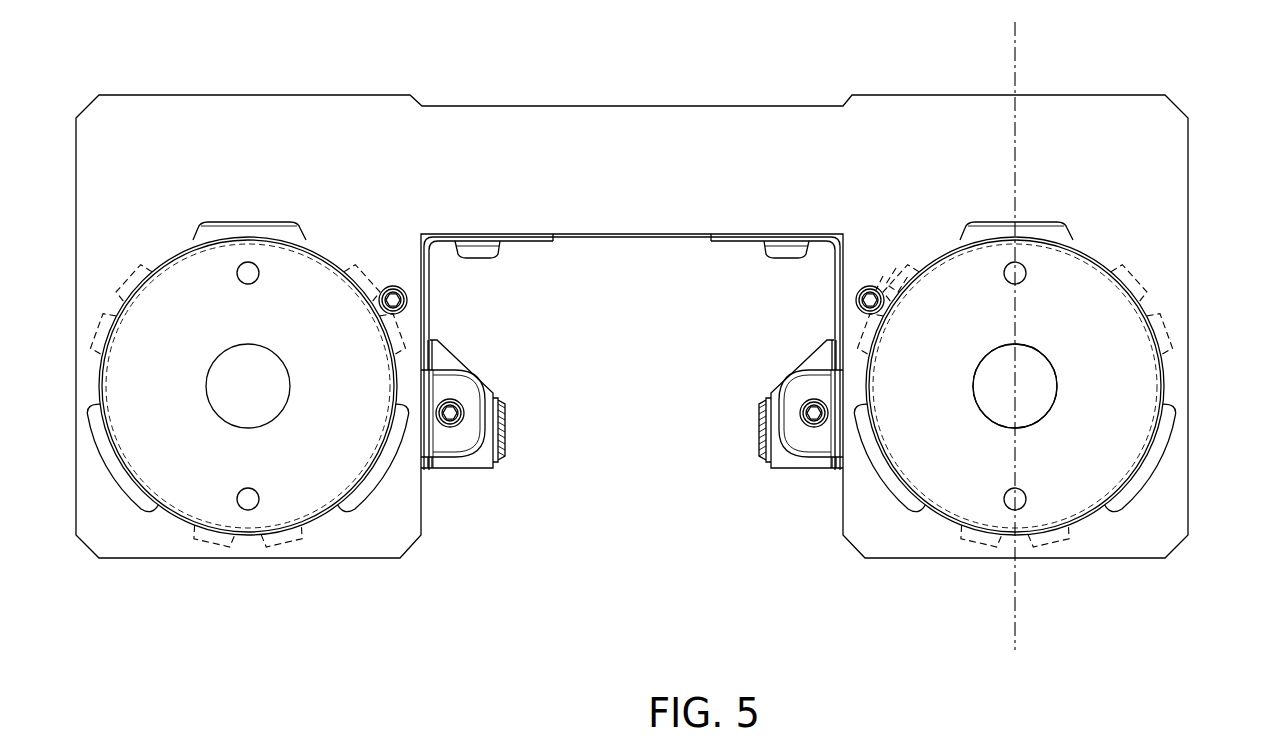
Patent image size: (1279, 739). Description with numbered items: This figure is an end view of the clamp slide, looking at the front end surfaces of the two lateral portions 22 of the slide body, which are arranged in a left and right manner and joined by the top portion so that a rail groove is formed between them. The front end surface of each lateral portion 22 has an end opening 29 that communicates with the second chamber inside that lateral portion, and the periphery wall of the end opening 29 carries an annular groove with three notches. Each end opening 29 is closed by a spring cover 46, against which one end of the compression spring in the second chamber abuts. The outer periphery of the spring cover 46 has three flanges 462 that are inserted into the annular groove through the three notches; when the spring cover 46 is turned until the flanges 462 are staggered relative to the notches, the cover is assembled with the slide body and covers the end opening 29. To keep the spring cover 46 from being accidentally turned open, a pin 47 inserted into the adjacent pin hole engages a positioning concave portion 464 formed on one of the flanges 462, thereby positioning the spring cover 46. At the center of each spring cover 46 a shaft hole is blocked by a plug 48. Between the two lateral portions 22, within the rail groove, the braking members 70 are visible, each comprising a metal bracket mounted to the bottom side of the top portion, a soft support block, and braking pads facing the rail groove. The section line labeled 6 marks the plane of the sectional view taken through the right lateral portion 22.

The lateral portion 22 is at (1133, 145).
The end opening 29 is at (1090, 255).
The spring cover 46 is at (1080, 487).
The pin 47 is at (856, 300).
The plug 48 is at (1045, 383).
The flange 462 is at (898, 275).
The positioning concave portion 464 is at (890, 280).
The braking member 70 is at (490, 482).
The section line 6- 6 is at (1015, 625).